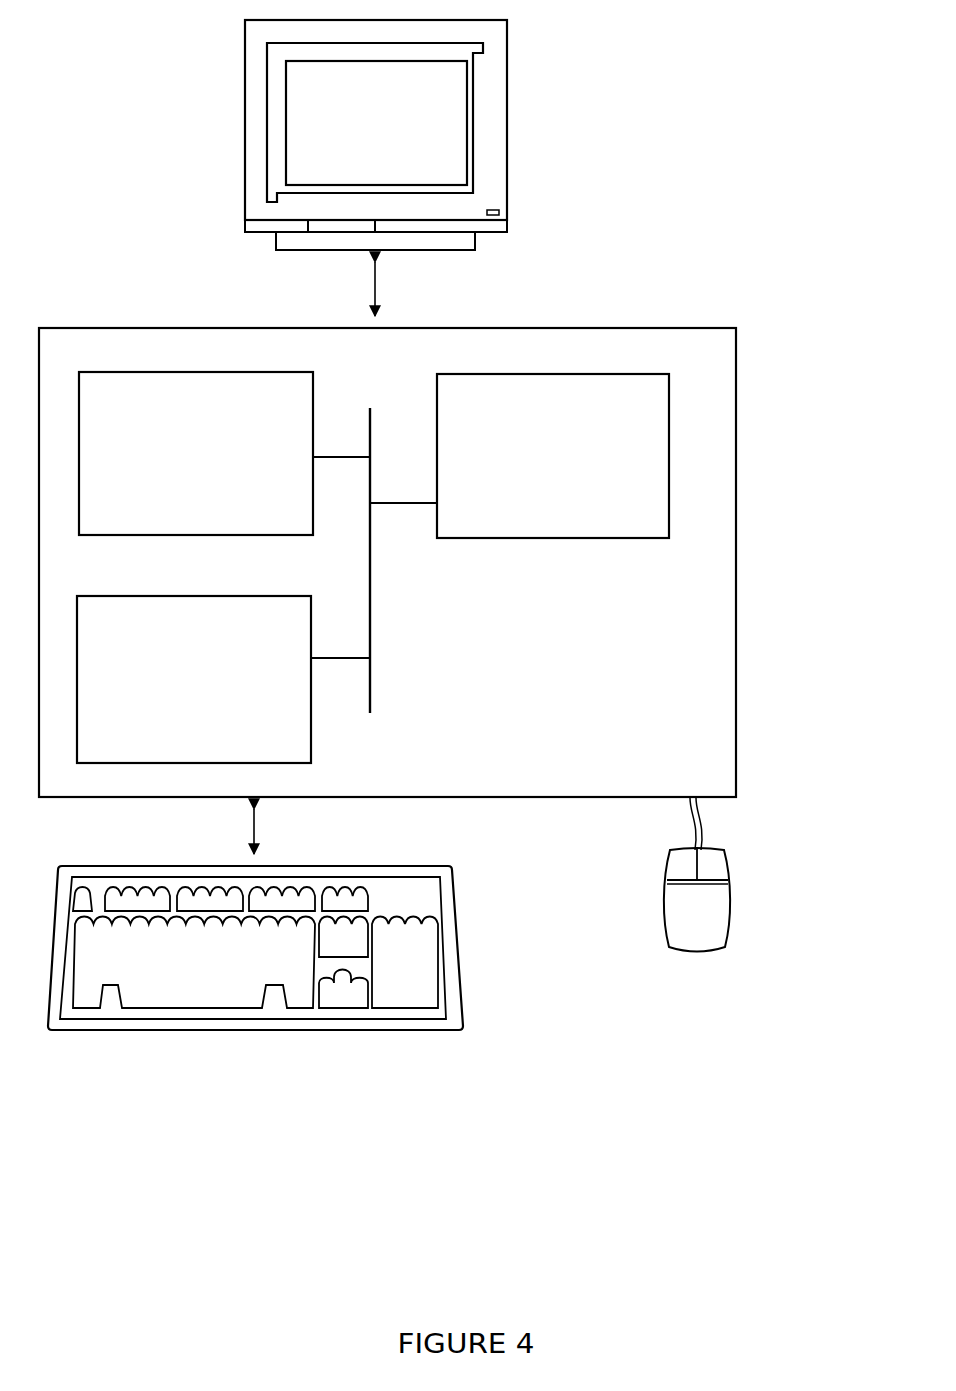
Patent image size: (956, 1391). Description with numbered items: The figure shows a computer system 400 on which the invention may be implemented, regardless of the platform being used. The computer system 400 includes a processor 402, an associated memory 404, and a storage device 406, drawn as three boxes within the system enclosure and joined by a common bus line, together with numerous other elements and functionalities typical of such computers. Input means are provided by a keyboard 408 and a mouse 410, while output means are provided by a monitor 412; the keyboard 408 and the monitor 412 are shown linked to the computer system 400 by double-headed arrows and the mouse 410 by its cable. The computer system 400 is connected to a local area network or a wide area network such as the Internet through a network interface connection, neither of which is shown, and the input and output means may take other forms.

The computer system 400 is at (722, 190).
The processor 402 is at (553, 456).
The memory 404 is at (196, 453).
The storage device 406 is at (194, 679).
The keyboard 408 is at (255, 948).
The mouse 410 is at (744, 930).
The monitor 412 is at (376, 135).